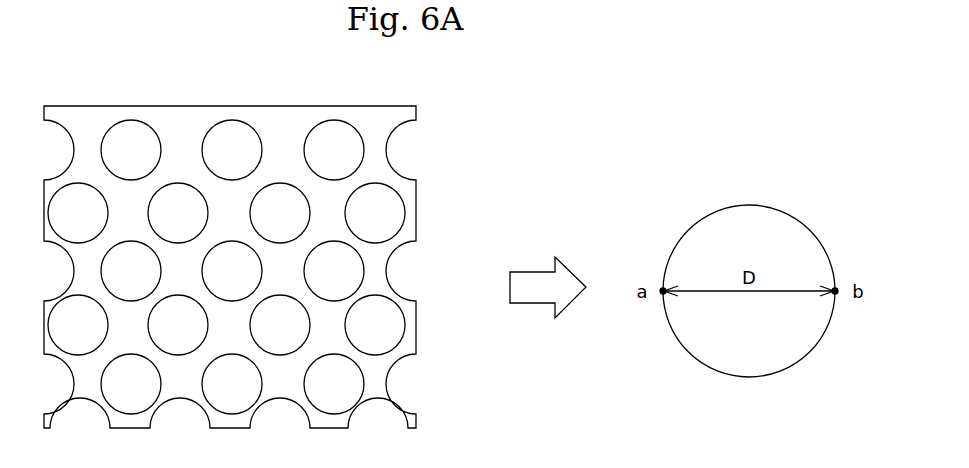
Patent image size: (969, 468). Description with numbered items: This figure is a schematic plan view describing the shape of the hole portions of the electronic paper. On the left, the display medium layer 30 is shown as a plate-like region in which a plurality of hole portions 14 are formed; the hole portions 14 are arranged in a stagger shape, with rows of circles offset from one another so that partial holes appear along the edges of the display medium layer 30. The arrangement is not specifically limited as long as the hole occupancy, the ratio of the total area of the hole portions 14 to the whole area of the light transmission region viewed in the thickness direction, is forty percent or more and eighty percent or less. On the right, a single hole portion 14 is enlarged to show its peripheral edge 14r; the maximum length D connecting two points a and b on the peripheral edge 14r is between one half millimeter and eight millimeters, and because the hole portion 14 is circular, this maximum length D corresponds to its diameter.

The hole portion 14 is at (458, 239).
The peripheral edge 14r is at (764, 205).
The display medium layer 30 is at (282, 118).